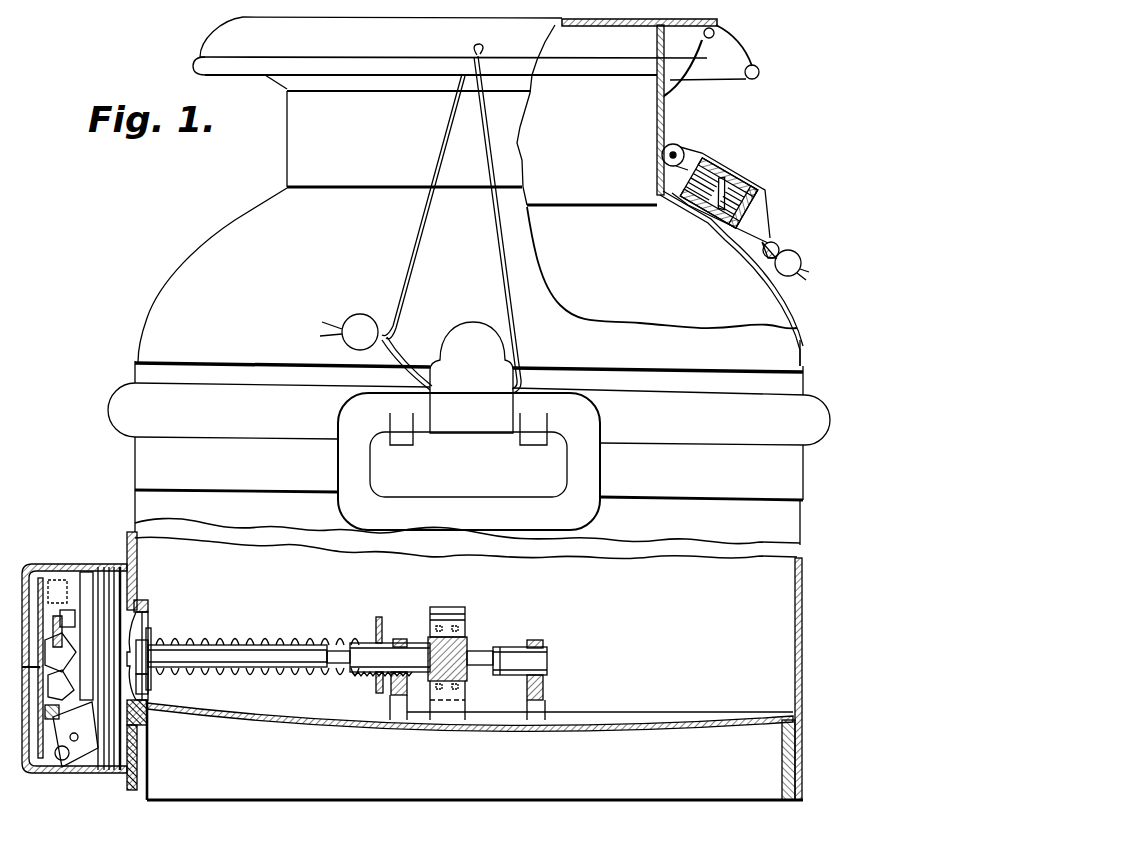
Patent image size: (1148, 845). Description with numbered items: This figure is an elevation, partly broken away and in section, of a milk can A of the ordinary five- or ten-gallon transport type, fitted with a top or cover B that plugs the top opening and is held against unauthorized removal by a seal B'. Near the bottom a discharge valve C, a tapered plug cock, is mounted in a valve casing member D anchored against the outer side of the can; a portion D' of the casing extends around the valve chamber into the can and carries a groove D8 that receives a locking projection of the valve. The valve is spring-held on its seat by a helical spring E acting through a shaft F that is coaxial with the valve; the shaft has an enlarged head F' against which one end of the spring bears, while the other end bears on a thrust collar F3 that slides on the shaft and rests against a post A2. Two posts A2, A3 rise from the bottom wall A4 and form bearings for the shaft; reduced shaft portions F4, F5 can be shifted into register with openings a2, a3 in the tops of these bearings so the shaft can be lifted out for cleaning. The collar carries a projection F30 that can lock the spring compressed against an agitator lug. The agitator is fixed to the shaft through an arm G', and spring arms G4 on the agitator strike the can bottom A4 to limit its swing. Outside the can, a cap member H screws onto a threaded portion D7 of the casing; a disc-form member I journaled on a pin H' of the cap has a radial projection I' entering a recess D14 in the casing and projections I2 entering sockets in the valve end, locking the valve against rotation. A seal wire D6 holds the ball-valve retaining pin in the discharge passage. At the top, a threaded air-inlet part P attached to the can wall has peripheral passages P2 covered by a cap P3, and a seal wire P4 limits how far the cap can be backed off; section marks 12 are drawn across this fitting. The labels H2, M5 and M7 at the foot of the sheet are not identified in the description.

The milk can A is at (800, 596).
The post A2 is at (395, 700).
The post A3 is at (540, 713).
The bottom wall A4 is at (576, 724).
The top B is at (723, 52).
The seal B' is at (420, 218).
The discharge valve C is at (149, 613).
The valve casing member D is at (148, 620).
The valve casing portion D' is at (193, 618).
The seal wire D6 is at (78, 765).
The threaded portion D7 is at (96, 585).
The groove D8 is at (150, 683).
The groove or recess D14 is at (71, 734).
The helical spring E is at (303, 640).
The shaft F is at (257, 629).
The enlarged head F' is at (237, 636).
The thrust collar F3 is at (365, 680).
The reduced shaft portion F4 is at (330, 680).
The reduced shaft portion F5 is at (490, 655).
The projection F30 is at (380, 694).
The arm G' is at (468, 668).
The spring arms G4 is at (458, 613).
The cap member H is at (74, 654).
The pin H' is at (76, 646).
The housing part H2 is at (142, 832).
The locking member I is at (33, 649).
The radial projection I' is at (74, 686).
The projections I2 is at (67, 602).
The member M5 is at (332, 833).
The member M7 is at (382, 833).
The threaded part P is at (766, 223).
The passages P2 is at (724, 183).
The cap P3 is at (762, 191).
The seal wire P4 is at (776, 236).
The opening a2 is at (397, 640).
The opening a3 is at (545, 650).
The section line 12 is at (696, 181).